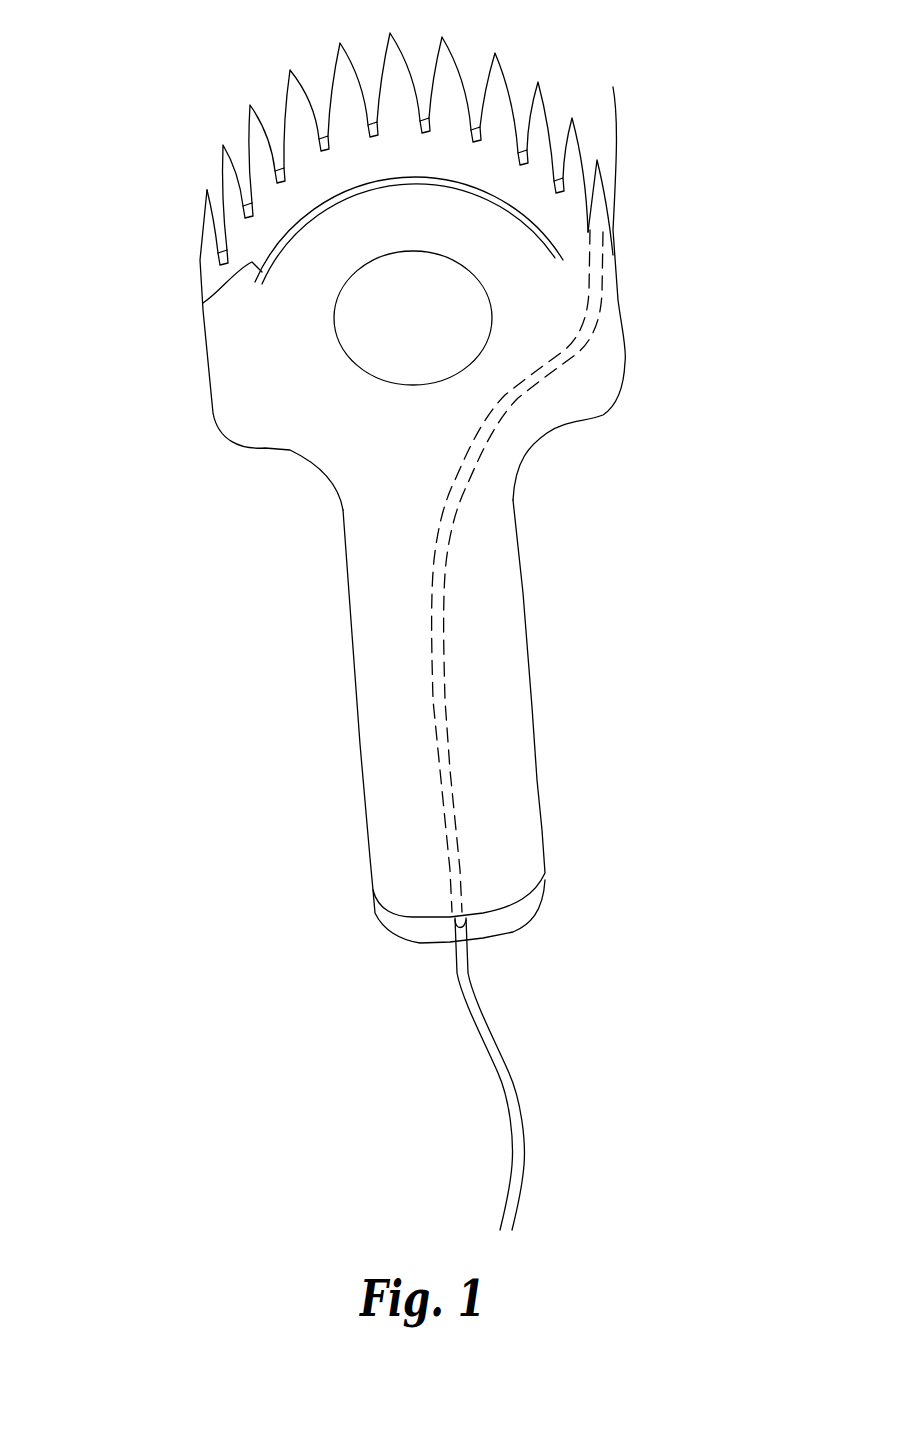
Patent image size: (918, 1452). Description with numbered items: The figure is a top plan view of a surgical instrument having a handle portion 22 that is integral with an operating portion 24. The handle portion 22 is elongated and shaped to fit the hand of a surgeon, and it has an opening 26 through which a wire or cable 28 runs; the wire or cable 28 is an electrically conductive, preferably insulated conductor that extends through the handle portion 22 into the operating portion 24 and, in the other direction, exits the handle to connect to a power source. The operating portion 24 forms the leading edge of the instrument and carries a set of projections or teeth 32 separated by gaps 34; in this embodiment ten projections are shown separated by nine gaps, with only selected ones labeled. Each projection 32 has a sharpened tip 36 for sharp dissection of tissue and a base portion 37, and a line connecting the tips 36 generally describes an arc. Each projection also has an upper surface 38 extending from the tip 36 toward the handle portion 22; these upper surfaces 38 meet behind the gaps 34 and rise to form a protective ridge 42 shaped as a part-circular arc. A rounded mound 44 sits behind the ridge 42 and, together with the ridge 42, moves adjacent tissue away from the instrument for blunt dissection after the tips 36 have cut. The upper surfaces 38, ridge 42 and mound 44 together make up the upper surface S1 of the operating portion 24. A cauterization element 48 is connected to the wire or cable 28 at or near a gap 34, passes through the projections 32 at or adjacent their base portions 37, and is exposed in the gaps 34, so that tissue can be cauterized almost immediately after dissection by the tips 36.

The handle portion 22 is at (500, 592).
The operating portion 24 is at (175, 365).
The opening 26 is at (463, 858).
The wire or cable 28 is at (508, 1073).
The projections or teeth 32 is at (235, 200).
The gaps 34 is at (278, 150).
The tip 36 is at (205, 192).
The base portion 37 is at (212, 272).
The upper surface 38 is at (343, 98).
The protective ridge 42 is at (203, 303).
The rounded mound 44 is at (403, 343).
The cauterization element 48 is at (420, 127).
The upper surface S1 is at (600, 347).